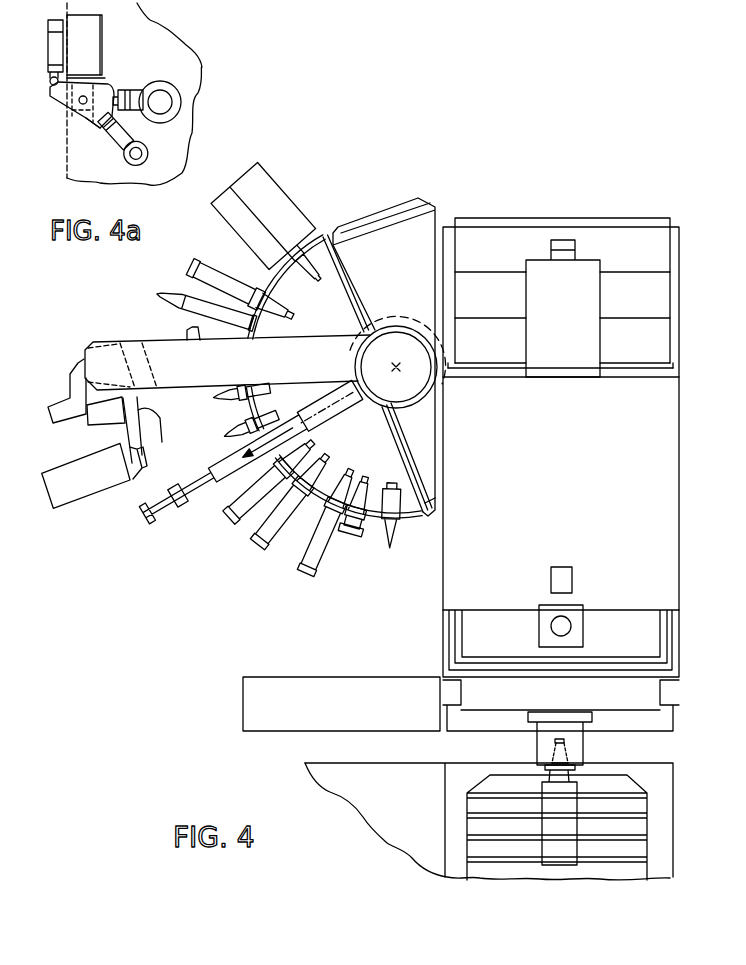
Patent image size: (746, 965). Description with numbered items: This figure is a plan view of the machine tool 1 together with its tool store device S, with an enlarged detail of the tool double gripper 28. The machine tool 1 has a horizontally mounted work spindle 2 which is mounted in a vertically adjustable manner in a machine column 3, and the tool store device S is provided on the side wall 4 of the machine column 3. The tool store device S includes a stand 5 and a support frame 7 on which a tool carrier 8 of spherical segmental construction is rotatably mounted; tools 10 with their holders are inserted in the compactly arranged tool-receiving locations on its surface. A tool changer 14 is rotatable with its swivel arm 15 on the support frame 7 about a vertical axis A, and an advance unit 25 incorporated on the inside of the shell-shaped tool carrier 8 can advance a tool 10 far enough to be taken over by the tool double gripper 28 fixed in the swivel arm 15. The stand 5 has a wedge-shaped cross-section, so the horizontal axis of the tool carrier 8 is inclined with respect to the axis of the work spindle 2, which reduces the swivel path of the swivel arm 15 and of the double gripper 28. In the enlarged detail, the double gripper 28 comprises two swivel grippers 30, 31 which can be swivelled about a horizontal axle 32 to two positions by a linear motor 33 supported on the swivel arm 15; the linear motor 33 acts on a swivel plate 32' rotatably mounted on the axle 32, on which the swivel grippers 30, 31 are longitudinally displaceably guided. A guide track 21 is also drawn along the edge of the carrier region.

In FIG. 4, the machine tool 1 is at (465, 200).
In FIG. 4, the work spindle 2 is at (575, 752).
In FIG. 4, the machine column 3 is at (622, 214).
In FIG. 4, the side wall 4 is at (437, 586).
In FIG. 4, the stand 5 is at (395, 203).
In FIG. 4, the support frame 7 is at (373, 237).
In FIG. 4, the tool carrier 8 is at (374, 526).
In FIG. 4a, the tool 10 is at (172, 102).
In FIG. 4, the tool 10 is at (558, 862).
In FIG. 4, the tool changer 14 is at (183, 400).
In FIG. 4, the swivel arm 15 is at (156, 343).
In FIG. 4, the guide track 21 is at (431, 506).
In FIG. 4, the advance unit 25 is at (232, 478).
In FIG. 4a, the tool double gripper 28 is at (48, 172).
In FIG. 4, the tool double gripper 28 is at (62, 372).
In FIG. 4a, the swivel gripper 30 is at (118, 145).
In FIG. 4a, the swivel gripper 31 is at (135, 92).
In FIG. 4a, the horizontal axle 32 is at (60, 105).
In FIG. 4a, the swivel plate 32' is at (57, 140).
In FIG. 4a, the linear motor 33 is at (48, 44).
In FIG. 4, the vertical axis A is at (396, 360).
In FIG. 4, the tool store device S is at (322, 206).